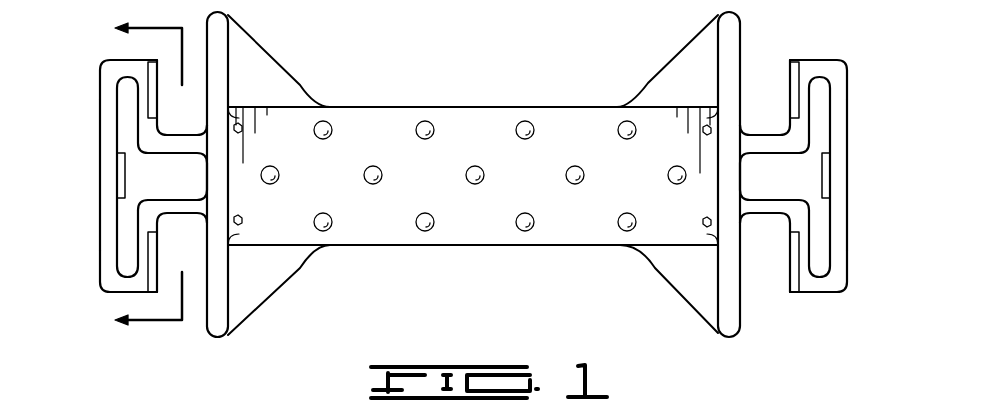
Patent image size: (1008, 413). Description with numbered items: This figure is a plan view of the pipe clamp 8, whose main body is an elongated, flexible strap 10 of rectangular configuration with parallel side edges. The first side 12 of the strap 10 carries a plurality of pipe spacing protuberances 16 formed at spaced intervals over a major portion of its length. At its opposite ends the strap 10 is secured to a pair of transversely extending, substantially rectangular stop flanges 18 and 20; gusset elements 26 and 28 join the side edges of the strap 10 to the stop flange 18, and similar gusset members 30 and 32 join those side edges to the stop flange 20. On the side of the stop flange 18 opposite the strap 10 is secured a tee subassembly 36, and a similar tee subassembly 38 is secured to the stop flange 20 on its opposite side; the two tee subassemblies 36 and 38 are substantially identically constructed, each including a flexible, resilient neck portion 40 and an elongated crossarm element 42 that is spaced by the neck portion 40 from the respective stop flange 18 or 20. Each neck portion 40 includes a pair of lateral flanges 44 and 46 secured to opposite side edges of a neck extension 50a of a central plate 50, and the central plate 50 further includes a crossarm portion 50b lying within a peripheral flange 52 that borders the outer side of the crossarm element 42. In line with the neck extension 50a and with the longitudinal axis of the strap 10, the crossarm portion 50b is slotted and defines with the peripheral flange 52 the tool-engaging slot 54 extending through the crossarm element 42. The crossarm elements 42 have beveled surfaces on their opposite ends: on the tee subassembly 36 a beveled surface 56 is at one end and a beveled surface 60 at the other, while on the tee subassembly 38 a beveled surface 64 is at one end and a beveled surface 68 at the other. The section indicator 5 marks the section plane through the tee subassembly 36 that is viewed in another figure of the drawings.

The section line 5- 5 is at (138, 176).
The pipe clamp 8 is at (531, 92).
The elongated flexible strap 10 is at (409, 95).
The first side 12 is at (330, 186).
The pipe spacing protuberances 16 is at (428, 121).
The stop flange 18 is at (207, 333).
The stop flange 20 is at (743, 329).
The gusset element 26 is at (263, 278).
The gusset element 28 is at (258, 60).
The gusset member 30 is at (692, 278).
The gusset member 32 is at (683, 78).
The tee subassembly 36 is at (88, 252).
The tee subassembly 38 is at (828, 306).
The neck portion 40 is at (170, 224).
The crossarm element 42 is at (108, 66).
The lateral flange 44 is at (163, 130).
The lateral flange 46 is at (158, 200).
The central plate 50 is at (140, 194).
The neck extension 50a is at (200, 192).
The crossarm portion 50b is at (125, 125).
The peripheral flange 52 is at (126, 287).
The slot 54 is at (118, 175).
The beveled surface 56 is at (163, 62).
The beveled surface 60 is at (152, 272).
The beveled surface 64 is at (795, 80).
The beveled surface 68 is at (792, 288).